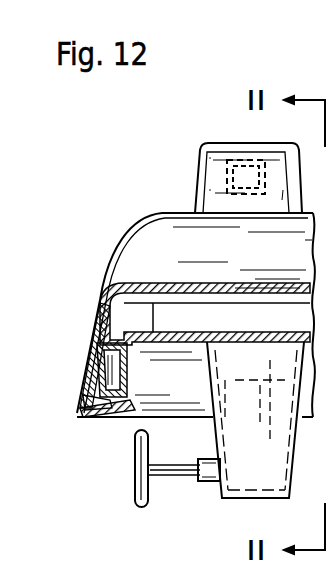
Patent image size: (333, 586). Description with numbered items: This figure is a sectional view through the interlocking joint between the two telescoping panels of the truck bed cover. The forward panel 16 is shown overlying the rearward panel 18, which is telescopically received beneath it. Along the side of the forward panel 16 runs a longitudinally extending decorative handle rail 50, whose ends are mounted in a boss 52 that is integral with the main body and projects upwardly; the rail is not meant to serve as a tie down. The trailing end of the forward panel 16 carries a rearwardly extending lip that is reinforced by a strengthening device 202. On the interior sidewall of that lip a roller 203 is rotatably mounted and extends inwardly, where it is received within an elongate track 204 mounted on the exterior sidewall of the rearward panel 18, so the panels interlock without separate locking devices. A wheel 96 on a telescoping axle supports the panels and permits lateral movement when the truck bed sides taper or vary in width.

The forward panel 16 is at (158, 211).
The rearward panel 18 is at (131, 291).
The decorative handle rail 50 is at (225, 164).
The boss 52 is at (238, 143).
The wheel 96 is at (135, 492).
The strengthening device 202 is at (88, 347).
The roller 203 is at (82, 386).
The track 204 is at (108, 418).